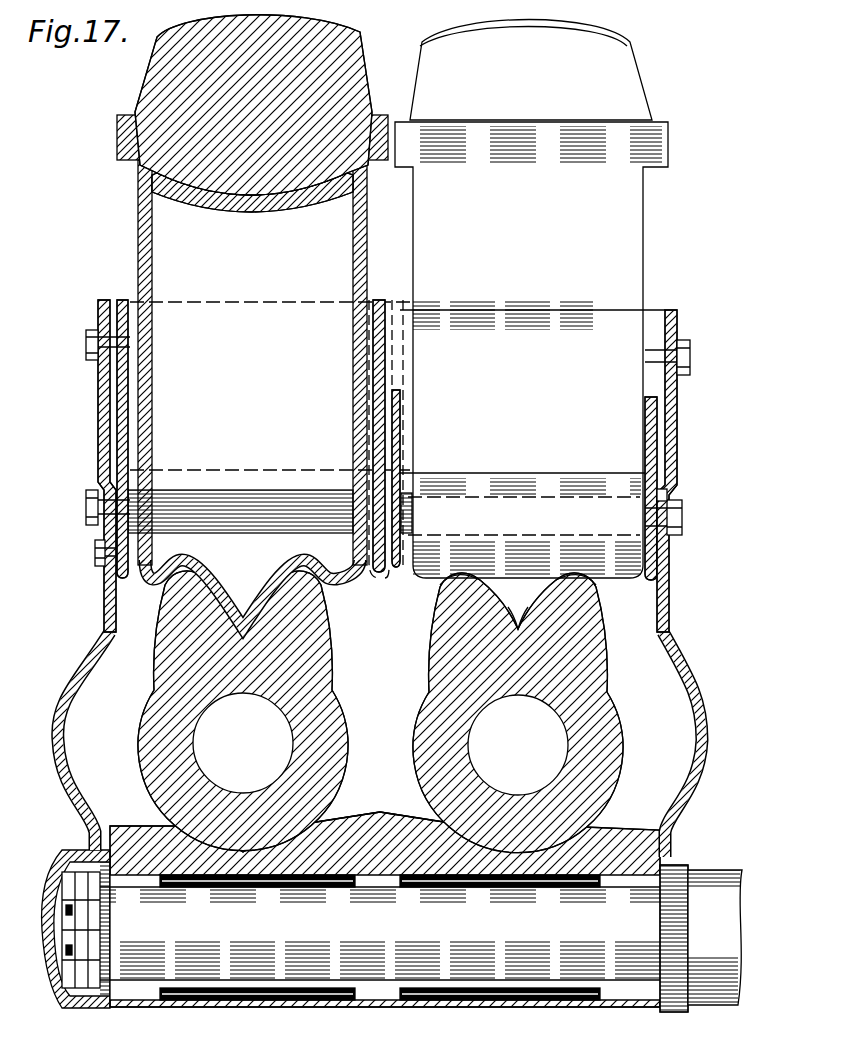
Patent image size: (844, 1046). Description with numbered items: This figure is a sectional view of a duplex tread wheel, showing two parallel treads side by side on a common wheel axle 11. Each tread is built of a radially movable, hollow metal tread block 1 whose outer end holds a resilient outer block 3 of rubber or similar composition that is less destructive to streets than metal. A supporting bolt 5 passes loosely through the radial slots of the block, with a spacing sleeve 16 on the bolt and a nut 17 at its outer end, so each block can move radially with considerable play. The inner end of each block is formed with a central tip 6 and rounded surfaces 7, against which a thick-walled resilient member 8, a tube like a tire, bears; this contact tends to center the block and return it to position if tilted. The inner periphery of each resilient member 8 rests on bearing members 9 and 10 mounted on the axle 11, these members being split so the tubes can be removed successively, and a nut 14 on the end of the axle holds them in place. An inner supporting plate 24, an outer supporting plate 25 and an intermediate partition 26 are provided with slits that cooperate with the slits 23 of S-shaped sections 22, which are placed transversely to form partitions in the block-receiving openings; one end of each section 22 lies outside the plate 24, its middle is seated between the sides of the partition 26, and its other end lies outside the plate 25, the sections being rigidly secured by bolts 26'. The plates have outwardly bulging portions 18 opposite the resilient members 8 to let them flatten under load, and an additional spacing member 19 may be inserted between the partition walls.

The tread block 1 is at (143, 233).
The outer block 3 is at (430, 68).
The supporting bolt 5 is at (88, 507).
The central tip 6 is at (243, 615).
The rounded surface 7 is at (277, 563).
The resilient member 8 is at (412, 718).
The bearing member 9 is at (180, 860).
The bearing member 10 is at (340, 850).
The wheel axle 11 is at (416, 945).
The nut 14 is at (90, 925).
The spacing sleeve 16 is at (262, 505).
The nut 17 is at (100, 531).
The outwardly bulging portion 18 is at (64, 707).
The additional spacing member 19 is at (400, 505).
The S-shaped section 22 is at (539, 310).
The slit 23 is at (648, 421).
The inner supporting plate 24 is at (660, 600).
The outer supporting plate 25 is at (118, 415).
The intermediate partition 26 is at (417, 421).
The bolt 26' is at (387, 352).